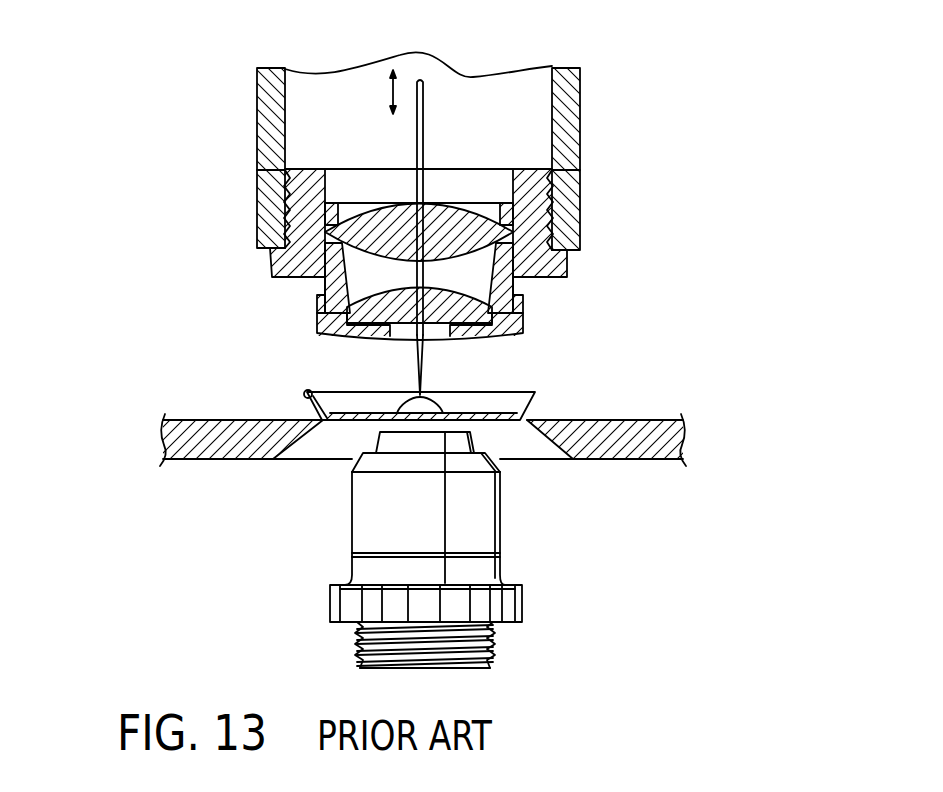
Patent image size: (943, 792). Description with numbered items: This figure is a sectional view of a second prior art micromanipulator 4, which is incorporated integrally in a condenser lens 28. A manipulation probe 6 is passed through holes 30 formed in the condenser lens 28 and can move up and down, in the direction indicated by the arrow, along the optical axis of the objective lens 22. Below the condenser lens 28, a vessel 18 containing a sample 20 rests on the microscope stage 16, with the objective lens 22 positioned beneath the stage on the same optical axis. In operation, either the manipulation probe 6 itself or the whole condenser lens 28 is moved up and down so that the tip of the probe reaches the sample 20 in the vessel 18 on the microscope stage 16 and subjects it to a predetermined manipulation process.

The micromanipulator 4 is at (500, 103).
The manipulation probe 6 is at (424, 116).
The condenser lens 28 is at (520, 286).
The holes 30 is at (383, 292).
The vessel 18 is at (303, 402).
The sample 20 is at (407, 397).
The microscope stage 16 is at (185, 460).
The objective lens 22 is at (503, 520).